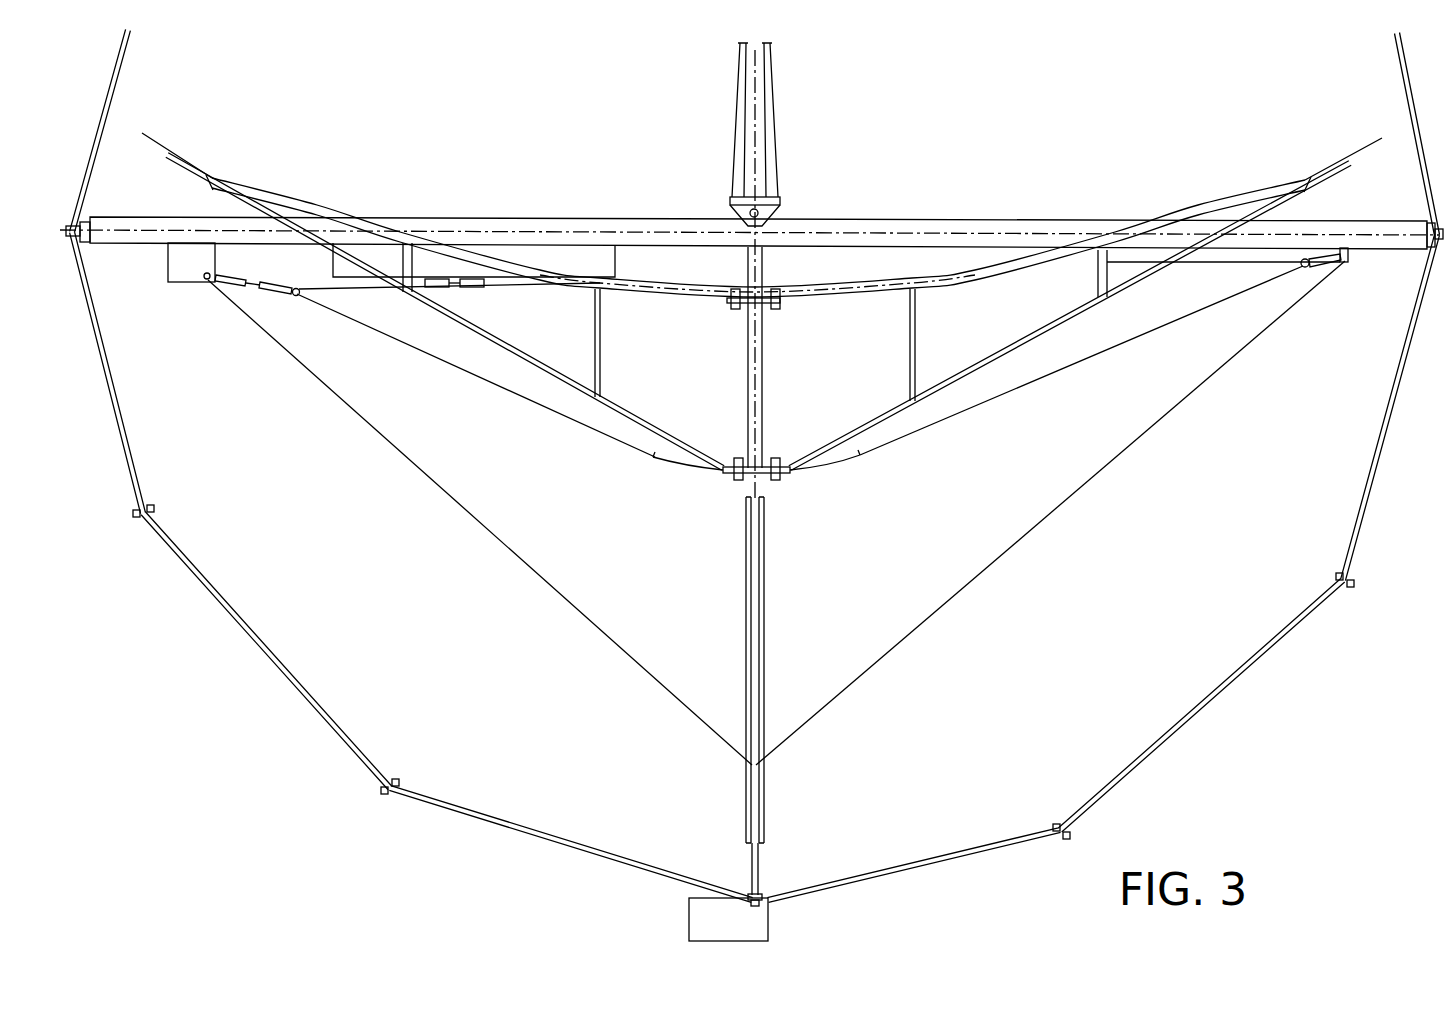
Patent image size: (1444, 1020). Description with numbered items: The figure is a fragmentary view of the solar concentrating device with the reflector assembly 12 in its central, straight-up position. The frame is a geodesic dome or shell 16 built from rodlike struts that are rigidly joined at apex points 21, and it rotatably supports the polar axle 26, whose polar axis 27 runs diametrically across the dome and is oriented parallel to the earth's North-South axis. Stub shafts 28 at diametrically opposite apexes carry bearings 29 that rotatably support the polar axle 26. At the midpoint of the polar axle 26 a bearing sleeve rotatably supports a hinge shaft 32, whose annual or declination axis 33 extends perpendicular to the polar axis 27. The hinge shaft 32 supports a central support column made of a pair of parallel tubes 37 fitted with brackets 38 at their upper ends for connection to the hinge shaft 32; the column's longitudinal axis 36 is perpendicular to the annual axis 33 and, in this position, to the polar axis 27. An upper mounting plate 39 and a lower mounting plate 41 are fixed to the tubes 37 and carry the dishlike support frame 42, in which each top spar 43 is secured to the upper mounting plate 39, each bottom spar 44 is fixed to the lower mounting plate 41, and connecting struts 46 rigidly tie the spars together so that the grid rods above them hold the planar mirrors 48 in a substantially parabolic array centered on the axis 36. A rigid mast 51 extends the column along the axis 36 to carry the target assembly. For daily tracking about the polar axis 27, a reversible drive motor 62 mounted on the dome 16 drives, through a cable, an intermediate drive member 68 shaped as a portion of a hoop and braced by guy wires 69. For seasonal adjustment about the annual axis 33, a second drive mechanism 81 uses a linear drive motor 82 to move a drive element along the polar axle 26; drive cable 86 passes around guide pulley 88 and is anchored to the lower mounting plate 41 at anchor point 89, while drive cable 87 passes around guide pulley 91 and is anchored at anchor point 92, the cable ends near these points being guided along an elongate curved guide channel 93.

The reflector assembly 12 is at (1227, 207).
The geodesic dome or shell 16 is at (1404, 437).
The apex points 21 is at (1355, 590).
The polar axle 26 is at (1017, 219).
The polar axis 27 is at (872, 233).
The stub shafts 28 is at (1440, 265).
The bearings 29 is at (1432, 226).
The hinge shaft 32 is at (772, 224).
The annual or declination axis 33 is at (452, 290).
The longitudinal axis 36 is at (770, 140).
The tubes 37 is at (766, 380).
The brackets 38 is at (740, 225).
The upper mounting plate 39 is at (738, 306).
The lower mounting plate 41 is at (766, 480).
The dishlike grid or support frame 42 is at (1075, 322).
The top spar 43 is at (984, 286).
The bottom spar 44 is at (1006, 350).
The connecting struts 46 is at (917, 347).
The planar mirrors or reflectors 48 is at (306, 208).
The mast 51 is at (733, 104).
The drive motor 62 is at (689, 907).
The intermediate drive member 68 is at (767, 580).
The guy wires 69 is at (548, 588).
The second drive mechanism 81 is at (527, 240).
The linear drive motor 82 is at (498, 247).
The drive cable 86 is at (363, 289).
The drive cable 87 is at (713, 276).
The guide pulley 88 is at (296, 298).
The anchor point 89 is at (735, 476).
The guide pulley 91 is at (1305, 270).
The anchor point 92 is at (793, 472).
The curved guide channel 93 is at (660, 458).